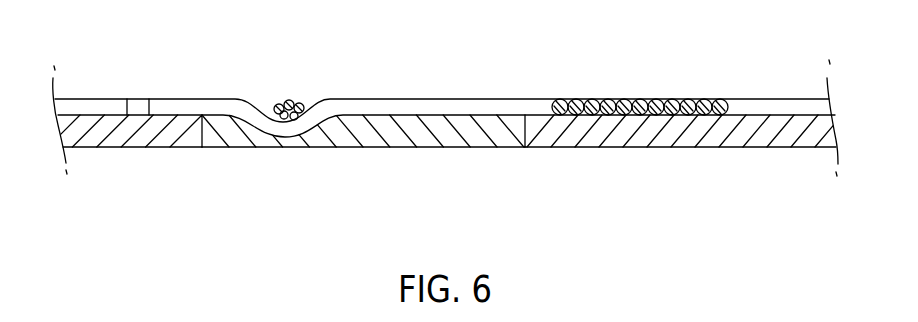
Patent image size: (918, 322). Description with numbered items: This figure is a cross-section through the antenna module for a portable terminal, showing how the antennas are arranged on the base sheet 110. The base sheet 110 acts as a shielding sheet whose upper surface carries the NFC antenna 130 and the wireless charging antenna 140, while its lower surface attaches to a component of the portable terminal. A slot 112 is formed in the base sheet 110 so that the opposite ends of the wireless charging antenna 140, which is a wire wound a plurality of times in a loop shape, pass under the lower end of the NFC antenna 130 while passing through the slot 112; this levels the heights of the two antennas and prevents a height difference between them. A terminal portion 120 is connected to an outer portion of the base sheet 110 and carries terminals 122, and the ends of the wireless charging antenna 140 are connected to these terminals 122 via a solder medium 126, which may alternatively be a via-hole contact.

The base sheet 110 is at (690, 147).
The slot 112 is at (408, 147).
The terminal portion 120 is at (143, 147).
The terminals 122 is at (87, 102).
The solder medium 126 is at (135, 102).
The NFC antenna 130 is at (262, 100).
The wireless charging antenna 140 is at (203, 103).